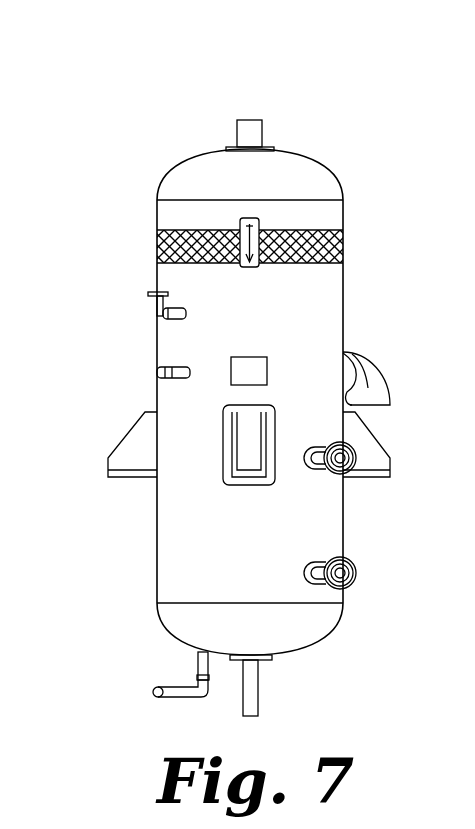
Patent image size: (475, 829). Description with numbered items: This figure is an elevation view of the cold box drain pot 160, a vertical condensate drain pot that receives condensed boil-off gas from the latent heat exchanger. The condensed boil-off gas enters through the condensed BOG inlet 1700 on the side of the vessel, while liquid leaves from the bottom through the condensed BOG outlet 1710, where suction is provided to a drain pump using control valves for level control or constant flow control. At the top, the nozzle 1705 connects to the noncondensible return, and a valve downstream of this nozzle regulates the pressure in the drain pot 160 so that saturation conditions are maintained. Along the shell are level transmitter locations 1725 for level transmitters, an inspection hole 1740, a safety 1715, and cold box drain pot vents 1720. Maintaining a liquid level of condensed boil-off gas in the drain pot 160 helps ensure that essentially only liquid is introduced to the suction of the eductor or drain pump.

The cold box drain pot 160 is at (136, 113).
The condensed BOG inlet 1700 is at (368, 389).
The nozzle 1705 is at (250, 122).
The condensed BOG outlet 1710 is at (252, 716).
The safety 1715 is at (148, 293).
The cold box drain pot vents 1720 is at (157, 372).
The level transmitter locations 1725 is at (355, 468).
The inspection hole 1740 is at (223, 458).